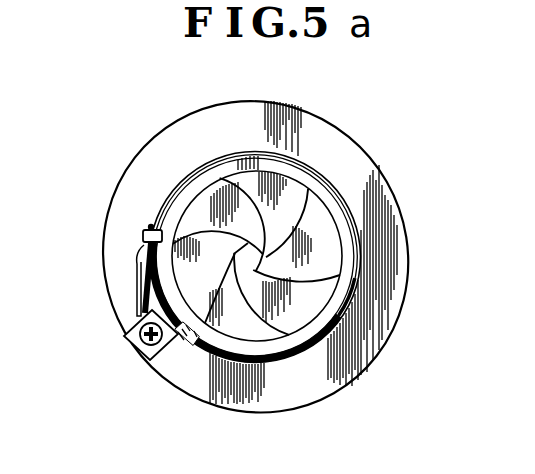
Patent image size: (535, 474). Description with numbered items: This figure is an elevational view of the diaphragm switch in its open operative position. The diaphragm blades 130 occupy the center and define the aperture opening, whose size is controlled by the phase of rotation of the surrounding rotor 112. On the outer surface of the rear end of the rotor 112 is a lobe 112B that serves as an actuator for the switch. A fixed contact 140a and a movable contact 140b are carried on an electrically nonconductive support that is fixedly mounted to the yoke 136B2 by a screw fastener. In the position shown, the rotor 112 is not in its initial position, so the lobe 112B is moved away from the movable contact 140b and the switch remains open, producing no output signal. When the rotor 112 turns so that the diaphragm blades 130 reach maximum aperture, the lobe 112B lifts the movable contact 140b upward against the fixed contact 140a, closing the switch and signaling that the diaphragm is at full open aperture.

The rotor 112 is at (320, 190).
The diaphragm blades 130 is at (308, 298).
The yoke 136B2 is at (300, 380).
The lobe 112B is at (190, 338).
The movable contact 140b is at (147, 232).
The fixed contact 140a is at (137, 268).